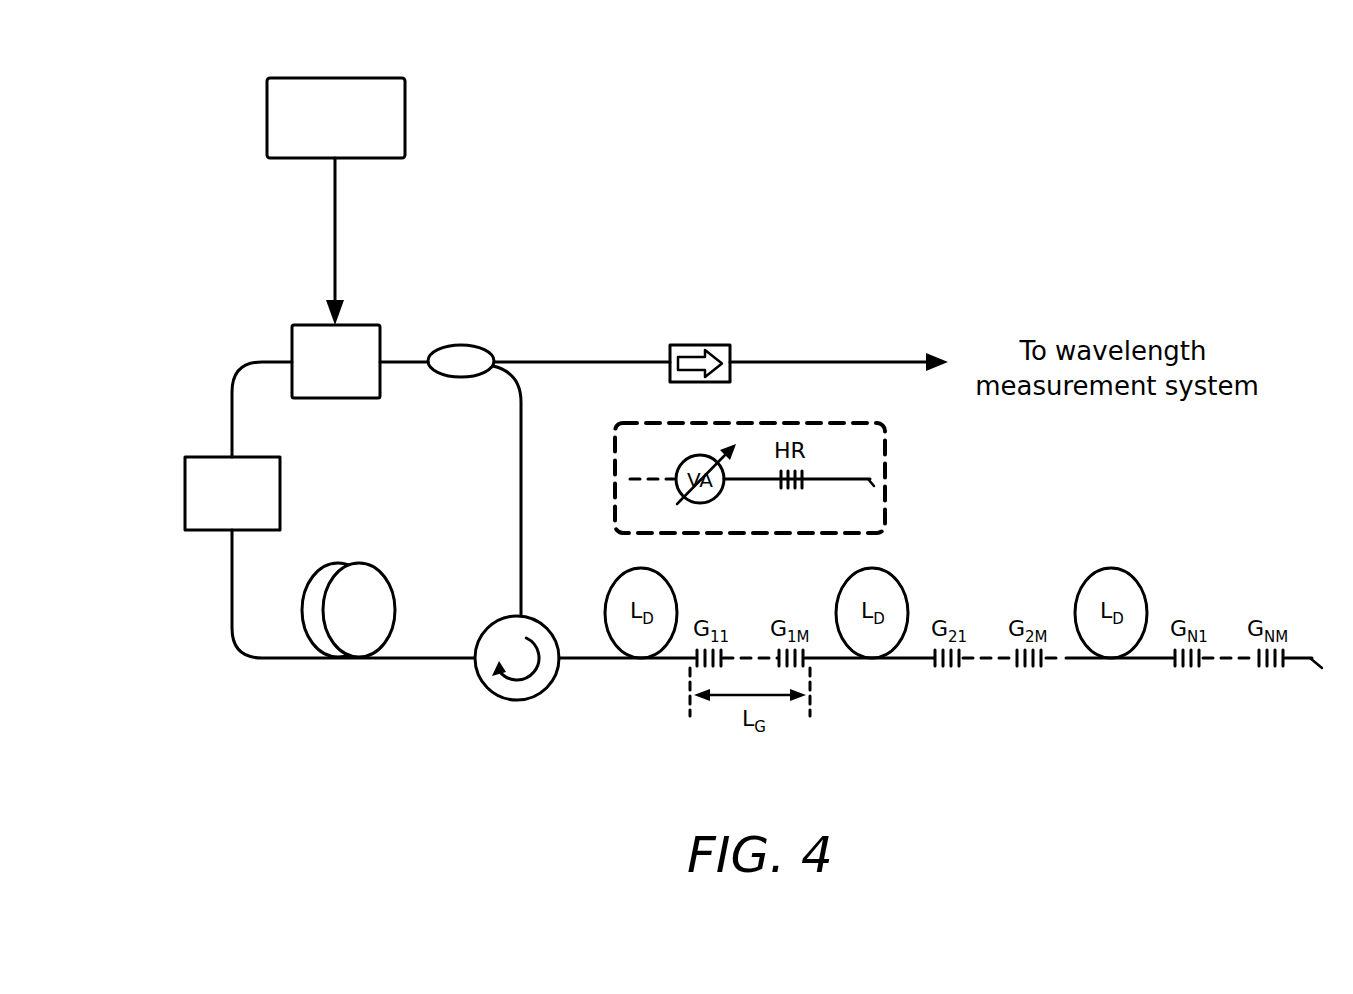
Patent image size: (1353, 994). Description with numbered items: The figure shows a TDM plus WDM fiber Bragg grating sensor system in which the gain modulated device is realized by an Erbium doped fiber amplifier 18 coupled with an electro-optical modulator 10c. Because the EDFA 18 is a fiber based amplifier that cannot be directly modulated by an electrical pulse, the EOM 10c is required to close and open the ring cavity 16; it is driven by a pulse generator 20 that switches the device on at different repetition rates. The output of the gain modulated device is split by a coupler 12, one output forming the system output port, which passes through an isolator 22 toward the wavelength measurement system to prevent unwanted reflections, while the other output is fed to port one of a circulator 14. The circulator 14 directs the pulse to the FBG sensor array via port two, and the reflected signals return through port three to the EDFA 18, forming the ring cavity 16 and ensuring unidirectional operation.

The pulse generator 20 is at (350, 78).
The electro-optical modulator 10c is at (306, 325).
The coupler 12 is at (489, 350).
The isolator 22 is at (735, 356).
The ring cavity 16 is at (378, 502).
The Erbium doped fiber amplifier 18 is at (212, 457).
The circulator 14 is at (556, 681).